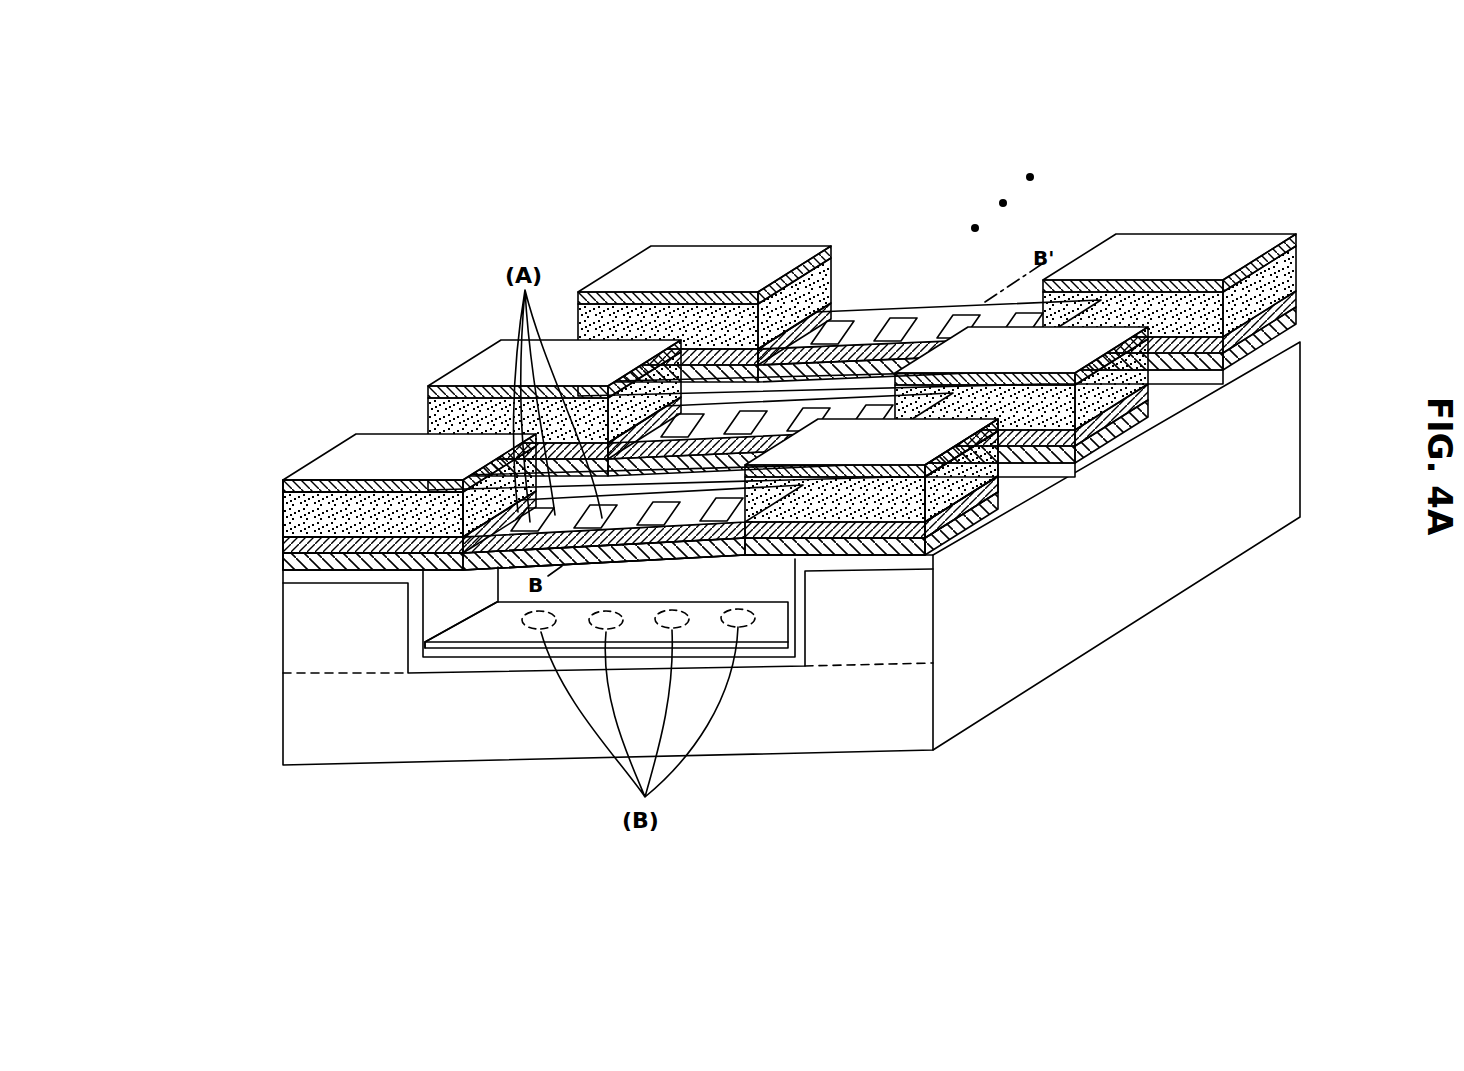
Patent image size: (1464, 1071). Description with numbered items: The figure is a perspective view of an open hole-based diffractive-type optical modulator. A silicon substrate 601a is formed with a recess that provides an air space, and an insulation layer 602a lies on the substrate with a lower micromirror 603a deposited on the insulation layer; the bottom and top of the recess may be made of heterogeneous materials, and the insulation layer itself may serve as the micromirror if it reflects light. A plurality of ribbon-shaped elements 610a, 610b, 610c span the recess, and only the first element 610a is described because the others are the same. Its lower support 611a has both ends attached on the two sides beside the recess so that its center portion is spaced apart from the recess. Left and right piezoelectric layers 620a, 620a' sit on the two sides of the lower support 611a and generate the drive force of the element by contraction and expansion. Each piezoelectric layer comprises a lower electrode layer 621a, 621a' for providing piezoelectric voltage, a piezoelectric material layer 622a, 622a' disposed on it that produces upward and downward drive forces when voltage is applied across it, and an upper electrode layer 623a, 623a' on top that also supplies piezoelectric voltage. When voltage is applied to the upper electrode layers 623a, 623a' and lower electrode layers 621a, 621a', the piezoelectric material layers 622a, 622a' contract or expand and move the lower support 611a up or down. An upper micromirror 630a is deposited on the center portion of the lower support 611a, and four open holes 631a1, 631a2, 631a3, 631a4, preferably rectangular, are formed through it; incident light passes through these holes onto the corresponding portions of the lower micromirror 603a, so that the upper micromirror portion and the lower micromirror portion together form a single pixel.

The silicon substrate 601a is at (843, 745).
The insulation layer 602a is at (750, 655).
The lower micromirror 603a is at (452, 648).
The upper micromirror 630a is at (500, 603).
The open hole 631a1 is at (612, 507).
The open hole 631a2 is at (626, 503).
The open hole 631a3 is at (681, 505).
The open hole 631a4 is at (737, 518).
The element 610a is at (173, 471).
The element 610b is at (468, 367).
The element 610c is at (608, 267).
The lower support 611a is at (283, 565).
The piezoelectric layer 620a is at (329, 445).
The lower electrode layer 621a is at (315, 475).
The piezoelectric material layer 622a is at (327, 449).
The upper electrode layer 623a is at (345, 414).
The piezoelectric layer 620a' is at (1025, 582).
The lower electrode layer 621a' is at (1049, 605).
The piezoelectric material layer 622a' is at (1075, 565).
The upper electrode layer 623a' is at (1096, 542).